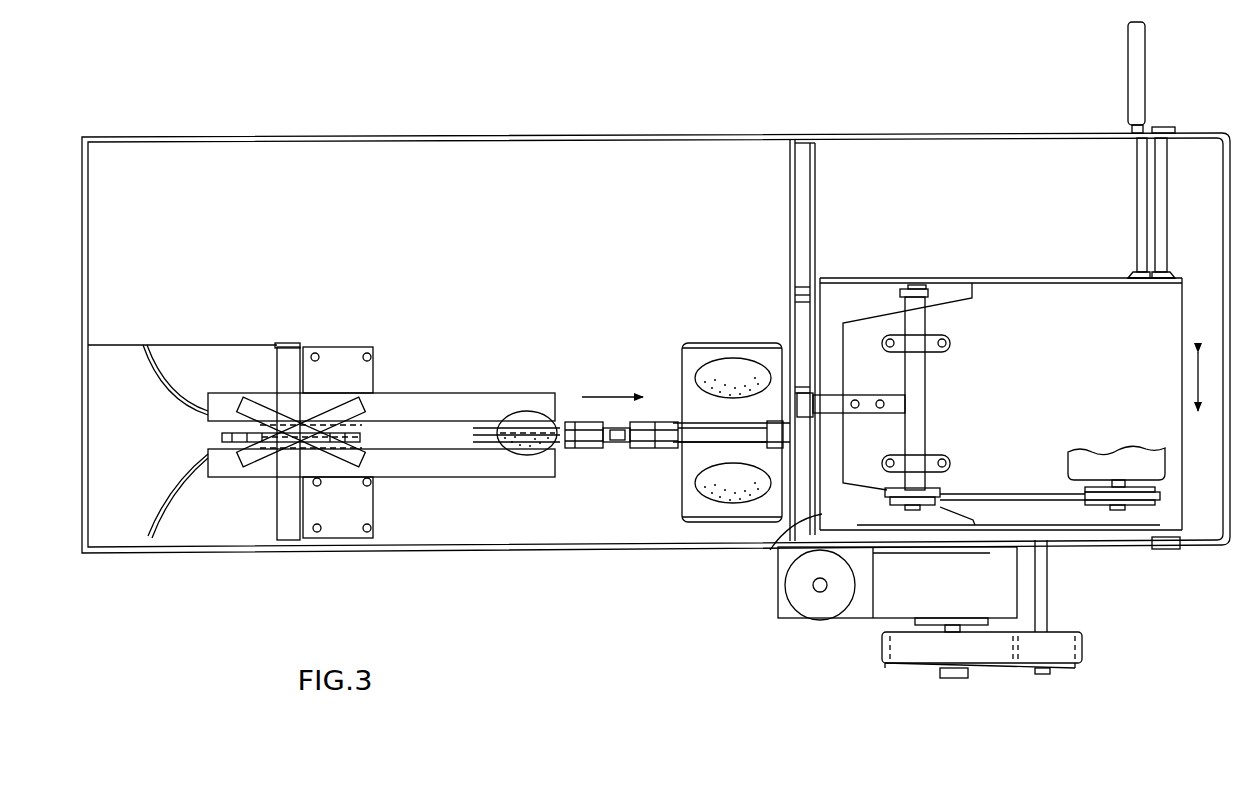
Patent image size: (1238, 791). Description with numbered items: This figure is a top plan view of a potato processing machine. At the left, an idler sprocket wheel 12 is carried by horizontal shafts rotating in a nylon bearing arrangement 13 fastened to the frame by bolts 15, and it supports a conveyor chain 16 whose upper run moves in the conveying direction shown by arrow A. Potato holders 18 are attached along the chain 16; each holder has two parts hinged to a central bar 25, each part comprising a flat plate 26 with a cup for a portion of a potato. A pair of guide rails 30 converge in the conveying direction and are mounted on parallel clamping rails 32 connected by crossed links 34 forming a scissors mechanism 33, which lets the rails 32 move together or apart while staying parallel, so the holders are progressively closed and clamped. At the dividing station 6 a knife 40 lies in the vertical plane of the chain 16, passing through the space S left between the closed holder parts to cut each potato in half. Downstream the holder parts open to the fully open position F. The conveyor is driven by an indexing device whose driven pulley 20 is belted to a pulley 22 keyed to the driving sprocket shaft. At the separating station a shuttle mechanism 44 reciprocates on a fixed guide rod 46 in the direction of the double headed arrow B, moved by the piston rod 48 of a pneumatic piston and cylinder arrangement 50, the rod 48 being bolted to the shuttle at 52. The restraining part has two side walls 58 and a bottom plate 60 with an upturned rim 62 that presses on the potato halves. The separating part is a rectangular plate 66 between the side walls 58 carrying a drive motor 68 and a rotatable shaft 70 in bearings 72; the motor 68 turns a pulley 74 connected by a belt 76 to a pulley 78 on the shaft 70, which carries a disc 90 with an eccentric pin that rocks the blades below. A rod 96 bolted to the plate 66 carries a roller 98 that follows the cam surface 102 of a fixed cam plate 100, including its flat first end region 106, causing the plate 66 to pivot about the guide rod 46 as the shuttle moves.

The dividing station 6 is at (498, 392).
The idler sprocket wheel 12 is at (223, 438).
The nylon bearing arrangement 13 is at (290, 367).
The bolts 15 is at (367, 540).
The conveyor chain 16 is at (612, 448).
The potato holder 18 is at (681, 378).
The driven pulley 20 is at (985, 652).
The pulley 22 is at (1062, 631).
The central bar 25 is at (712, 445).
The flat plate 26 is at (690, 503).
The guide rails 30 is at (170, 357).
The clamping rails 32 is at (443, 394).
The scissors mechanism 33 is at (248, 394).
The crossed links 34 is at (347, 407).
The knife 40 is at (473, 436).
The shuttle mechanism 44 is at (1016, 272).
The guide rod 46 is at (1168, 193).
The piston rod 48 is at (1137, 195).
The double acting pneumatic piston and cylinder arrangement 50 is at (1129, 58).
The bolted connection 52 is at (1144, 280).
The side walls 58 is at (984, 277).
The bottom plate 60 is at (876, 508).
The upturned rim 62 is at (790, 545).
The rectangular plate 66 is at (1066, 330).
The drive motor 68 is at (1103, 450).
The rotatable shaft 70 is at (925, 381).
The bearings 72 is at (947, 336).
The pulley 74 is at (1160, 496).
The belt 76 is at (1016, 491).
The pulley 78 is at (897, 510).
The disc 90 is at (920, 285).
The rod 96 is at (892, 396).
The roller 98 is at (797, 405).
The cam plate 100 is at (791, 281).
The cam surface 102 is at (797, 330).
The first end region 106 is at (808, 266).
The conveying direction arrow A is at (612, 385).
The shuttle movement arrow B is at (1205, 365).
The fully open position F is at (716, 342).
The space S is at (572, 450).